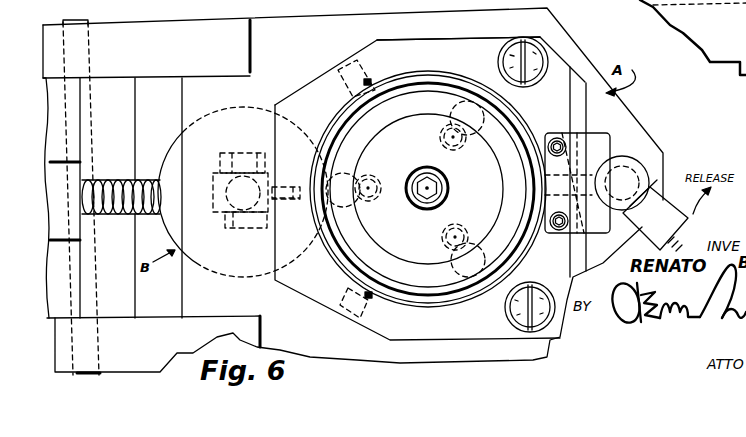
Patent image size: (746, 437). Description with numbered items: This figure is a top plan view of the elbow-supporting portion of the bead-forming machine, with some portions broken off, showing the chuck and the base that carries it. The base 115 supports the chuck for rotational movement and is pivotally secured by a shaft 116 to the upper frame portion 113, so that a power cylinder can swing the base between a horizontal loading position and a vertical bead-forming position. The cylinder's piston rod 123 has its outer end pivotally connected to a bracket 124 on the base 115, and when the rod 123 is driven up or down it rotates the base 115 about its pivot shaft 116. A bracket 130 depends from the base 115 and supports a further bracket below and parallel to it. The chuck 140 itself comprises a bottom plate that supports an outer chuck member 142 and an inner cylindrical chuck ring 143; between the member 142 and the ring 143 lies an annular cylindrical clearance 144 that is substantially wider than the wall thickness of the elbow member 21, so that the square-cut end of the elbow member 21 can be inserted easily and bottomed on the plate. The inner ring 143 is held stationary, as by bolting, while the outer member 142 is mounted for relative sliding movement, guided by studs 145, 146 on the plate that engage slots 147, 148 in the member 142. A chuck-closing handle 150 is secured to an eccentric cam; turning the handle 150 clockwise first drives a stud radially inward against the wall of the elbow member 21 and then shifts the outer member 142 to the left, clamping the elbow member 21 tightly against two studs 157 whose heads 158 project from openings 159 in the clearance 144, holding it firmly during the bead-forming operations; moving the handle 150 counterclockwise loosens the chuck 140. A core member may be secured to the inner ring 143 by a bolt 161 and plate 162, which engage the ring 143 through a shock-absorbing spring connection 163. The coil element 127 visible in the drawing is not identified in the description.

The base 115 is at (306, 43).
The upper frame portion 113 is at (73, 123).
The shaft 116 is at (84, 50).
The coil spring 127 is at (128, 218).
The rod 123 is at (216, 190).
The bracket 124 is at (212, 238).
The stud 145 is at (295, 187).
The slot 147 is at (278, 204).
The elbow member 21 is at (463, 298).
The chuck 140 is at (517, 109).
The annular cylindrical clearance 144 is at (452, 76).
The heads 158 is at (378, 104).
The inner cylindrical chuck ring 143 is at (433, 111).
The bolt 161 is at (448, 185).
The plate 162 is at (491, 213).
The shock-absorbing spring connection 163 is at (440, 141).
The bracket 130 is at (477, 124).
The studs 157 is at (362, 64).
The openings 159 is at (348, 91).
The stud 146 is at (545, 44).
The slot 148 is at (508, 44).
The outer chuck member 142 is at (440, 58).
The chuck-closing handle 150 is at (688, 218).